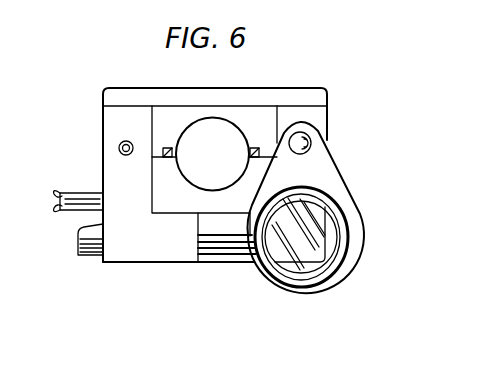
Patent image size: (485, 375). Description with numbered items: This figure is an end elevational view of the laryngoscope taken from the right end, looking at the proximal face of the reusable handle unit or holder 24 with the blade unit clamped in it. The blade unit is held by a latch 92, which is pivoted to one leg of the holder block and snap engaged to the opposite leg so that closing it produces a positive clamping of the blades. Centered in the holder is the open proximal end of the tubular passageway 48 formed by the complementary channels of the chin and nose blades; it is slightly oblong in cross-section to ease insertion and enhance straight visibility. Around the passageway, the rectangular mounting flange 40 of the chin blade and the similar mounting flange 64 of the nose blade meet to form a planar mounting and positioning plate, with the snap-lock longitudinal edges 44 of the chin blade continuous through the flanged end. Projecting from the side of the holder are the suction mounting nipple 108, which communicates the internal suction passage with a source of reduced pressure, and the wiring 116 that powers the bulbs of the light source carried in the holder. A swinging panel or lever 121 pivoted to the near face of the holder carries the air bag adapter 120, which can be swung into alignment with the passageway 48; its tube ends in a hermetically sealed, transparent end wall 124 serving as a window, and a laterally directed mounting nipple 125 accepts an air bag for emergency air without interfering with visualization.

The latch 92 is at (279, 89).
The handle unit or holder 24 is at (173, 259).
The mounting flange 64 is at (175, 212).
The tubular passageway 48 is at (218, 133).
The mounting flange 40 is at (173, 126).
The longitudinal edges 44 is at (155, 150).
The end wall 124 is at (118, 148).
The wiring 116 is at (83, 199).
The mounting nipple 108 is at (97, 245).
The mounting nipple 125 is at (220, 249).
The swinging panel or lever 121 is at (335, 190).
The air bag adapter 120 is at (290, 287).